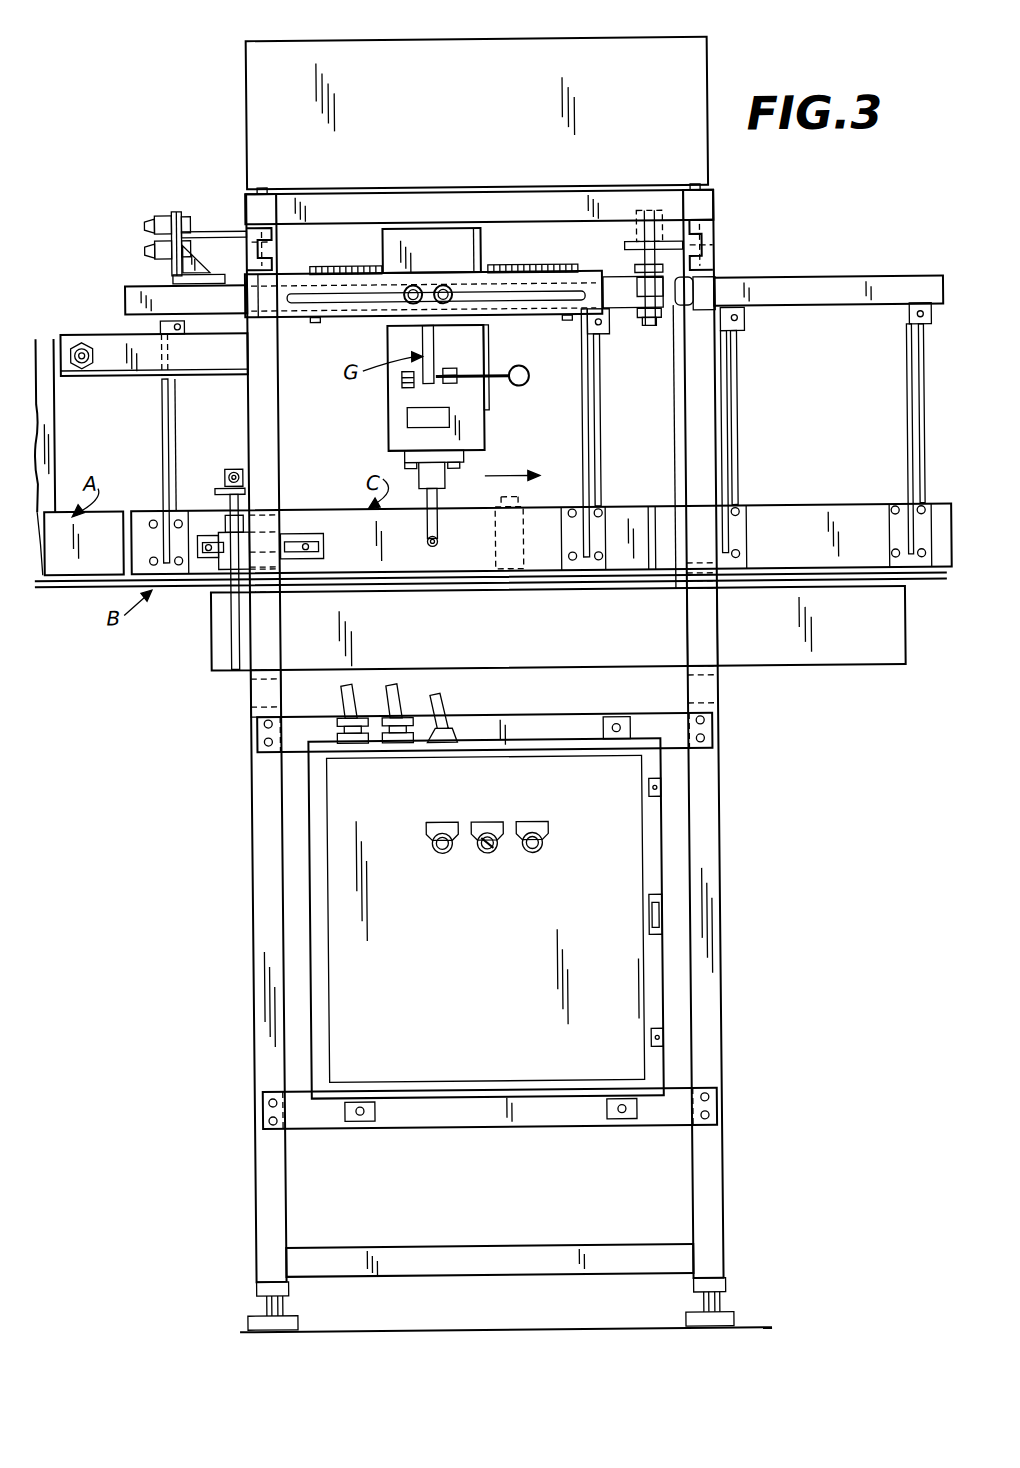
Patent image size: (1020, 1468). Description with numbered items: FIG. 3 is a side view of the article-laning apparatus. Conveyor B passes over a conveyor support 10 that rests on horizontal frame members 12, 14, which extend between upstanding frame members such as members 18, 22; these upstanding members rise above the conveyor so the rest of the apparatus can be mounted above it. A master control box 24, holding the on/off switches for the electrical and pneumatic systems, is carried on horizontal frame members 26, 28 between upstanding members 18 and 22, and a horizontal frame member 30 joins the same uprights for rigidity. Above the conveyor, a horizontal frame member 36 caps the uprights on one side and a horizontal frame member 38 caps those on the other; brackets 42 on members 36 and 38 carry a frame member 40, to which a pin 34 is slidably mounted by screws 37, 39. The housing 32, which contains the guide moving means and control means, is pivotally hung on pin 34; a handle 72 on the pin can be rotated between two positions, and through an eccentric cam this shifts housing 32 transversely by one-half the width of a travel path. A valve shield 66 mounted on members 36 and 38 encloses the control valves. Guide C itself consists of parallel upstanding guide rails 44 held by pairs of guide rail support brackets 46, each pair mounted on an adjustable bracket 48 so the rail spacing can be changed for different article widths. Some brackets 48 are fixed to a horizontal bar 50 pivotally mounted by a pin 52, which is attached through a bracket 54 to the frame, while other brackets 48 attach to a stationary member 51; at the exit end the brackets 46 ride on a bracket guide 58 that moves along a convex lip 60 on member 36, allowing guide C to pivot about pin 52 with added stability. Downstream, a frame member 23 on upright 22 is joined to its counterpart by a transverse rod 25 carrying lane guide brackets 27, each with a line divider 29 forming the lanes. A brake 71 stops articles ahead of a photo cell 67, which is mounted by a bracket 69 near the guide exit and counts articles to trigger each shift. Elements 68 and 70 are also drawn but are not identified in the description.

The conveyor support 10 is at (855, 660).
The horizontal frame member 12 is at (717, 690).
The horizontal frame member 14 is at (258, 697).
The upstanding frame member 18 is at (720, 882).
The upstanding frame member 22 is at (255, 862).
The frame member 23 is at (133, 370).
The master control box 24 is at (513, 988).
The rod 25 is at (87, 343).
The horizontal frame member 26 is at (300, 722).
The lane guide bracket 27 is at (57, 457).
The horizontal frame member 28 is at (320, 1125).
The line divider 29 is at (94, 573).
The horizontal frame member 30 is at (487, 1258).
The housing 32 is at (389, 414).
The pin 34 is at (437, 360).
The horizontal frame member 36 is at (279, 205).
The screw 37 is at (412, 300).
The horizontal frame member 38 is at (710, 202).
The screw 39 is at (446, 290).
The frame member 40 is at (512, 290).
The bracket 42 is at (250, 244).
The guide rail 44 is at (828, 508).
The guide rail support bracket 46 is at (182, 404).
The adjustable bracket 48 is at (190, 330).
The horizontal bar 50 is at (636, 318).
The stationary member 51 is at (820, 288).
The pin 52 is at (663, 327).
The bracket 54 is at (675, 245).
The bracket guide 58 is at (150, 226).
The convex lip 60 is at (226, 231).
The valve shield 66 is at (590, 56).
The photo cell 67 is at (232, 466).
The slot 68 is at (575, 292).
The bracket 69 is at (232, 608).
The slide bar 70 is at (285, 285).
The brake 71 is at (310, 540).
The handle 72 is at (522, 368).